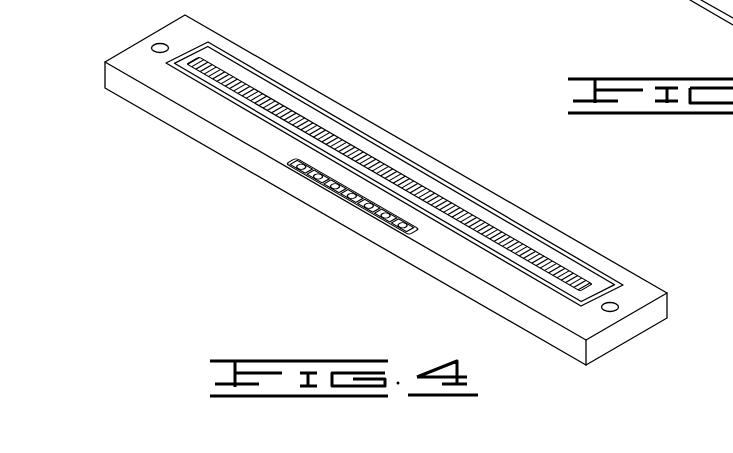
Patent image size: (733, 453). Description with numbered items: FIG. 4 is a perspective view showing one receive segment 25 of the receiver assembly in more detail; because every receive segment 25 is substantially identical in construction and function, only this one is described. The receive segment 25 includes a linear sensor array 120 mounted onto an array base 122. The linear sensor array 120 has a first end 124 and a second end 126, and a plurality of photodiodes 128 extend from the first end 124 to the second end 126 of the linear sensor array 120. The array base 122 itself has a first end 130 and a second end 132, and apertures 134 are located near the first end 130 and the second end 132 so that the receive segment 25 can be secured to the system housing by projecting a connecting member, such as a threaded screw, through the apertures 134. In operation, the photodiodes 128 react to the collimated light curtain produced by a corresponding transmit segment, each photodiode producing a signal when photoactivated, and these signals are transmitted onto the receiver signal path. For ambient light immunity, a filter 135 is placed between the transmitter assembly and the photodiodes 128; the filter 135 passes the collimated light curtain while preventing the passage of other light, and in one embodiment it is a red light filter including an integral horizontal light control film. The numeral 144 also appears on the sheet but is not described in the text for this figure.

The receive segment 25 is at (155, 204).
The linear sensor array 120 is at (422, 175).
The array base 122 is at (443, 245).
The first end 124 is at (597, 286).
The second end 126 is at (192, 56).
The photodiodes 128 is at (553, 267).
The first end 130 is at (577, 314).
The second end 132 is at (118, 62).
The apertures 134 is at (157, 43).
The filter 135 is at (506, 214).
The element of adjacent figure 144 is at (697, 2).